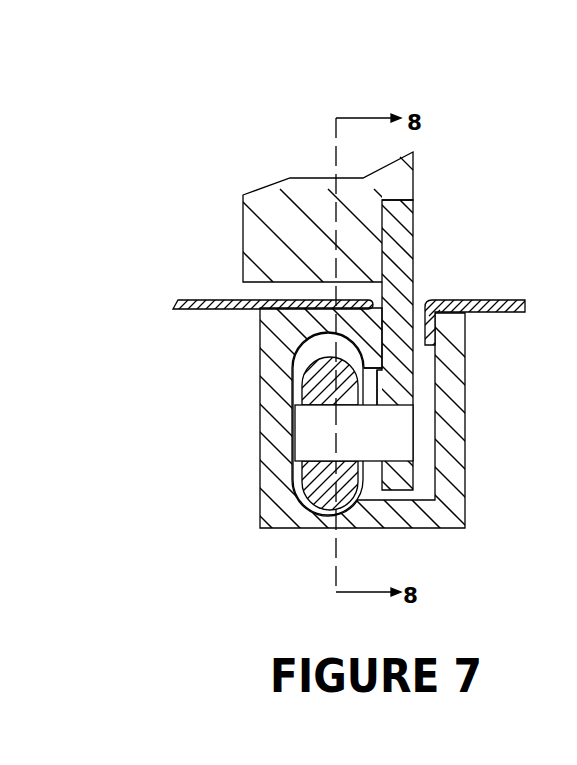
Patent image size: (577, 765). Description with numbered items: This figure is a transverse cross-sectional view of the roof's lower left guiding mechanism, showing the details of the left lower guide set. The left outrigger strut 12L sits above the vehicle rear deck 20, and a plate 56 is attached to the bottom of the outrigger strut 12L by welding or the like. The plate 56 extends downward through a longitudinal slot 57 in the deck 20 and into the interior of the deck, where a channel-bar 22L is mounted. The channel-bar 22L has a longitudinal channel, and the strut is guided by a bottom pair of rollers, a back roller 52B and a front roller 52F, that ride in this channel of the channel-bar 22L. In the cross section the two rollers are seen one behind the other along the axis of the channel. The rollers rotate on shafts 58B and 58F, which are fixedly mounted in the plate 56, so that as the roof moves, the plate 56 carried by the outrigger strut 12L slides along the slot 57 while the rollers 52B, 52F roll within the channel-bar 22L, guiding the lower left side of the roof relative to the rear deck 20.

The left outrigger strut 12L is at (249, 240).
The vehicle rear deck 20 is at (240, 299).
The channel-bar 22L is at (262, 460).
The front roller 52F is at (261, 330).
The back roller 52B is at (305, 372).
The plate 56 is at (400, 247).
The longitudinal slot 57 is at (418, 308).
The front shaft 58F is at (380, 400).
The back shaft 58B is at (393, 437).